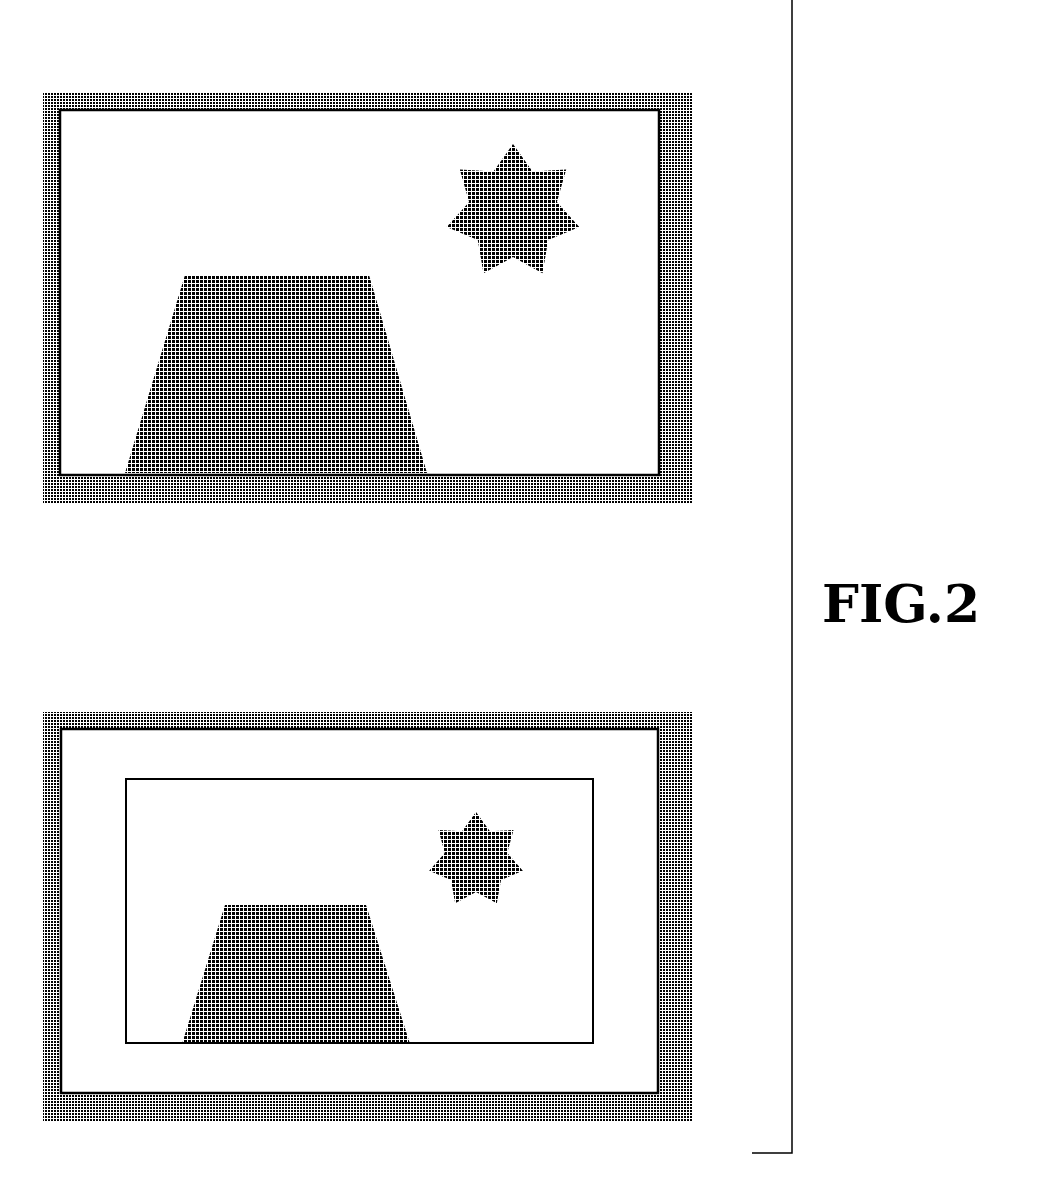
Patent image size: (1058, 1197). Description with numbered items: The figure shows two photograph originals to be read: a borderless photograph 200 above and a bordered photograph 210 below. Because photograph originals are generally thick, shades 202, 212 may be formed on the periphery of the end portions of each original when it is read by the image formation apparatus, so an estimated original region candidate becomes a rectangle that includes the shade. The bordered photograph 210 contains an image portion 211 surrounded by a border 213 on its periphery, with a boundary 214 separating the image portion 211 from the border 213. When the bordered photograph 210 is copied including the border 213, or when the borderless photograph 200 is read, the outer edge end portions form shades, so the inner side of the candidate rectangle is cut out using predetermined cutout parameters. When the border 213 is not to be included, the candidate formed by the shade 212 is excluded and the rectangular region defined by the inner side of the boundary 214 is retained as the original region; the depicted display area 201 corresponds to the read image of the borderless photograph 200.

The borderless photograph 200 is at (410, 282).
The display area 201 is at (500, 445).
The shade 202 is at (683, 205).
The bordered photograph 210 is at (410, 894).
The image portion 211 is at (419, 911).
The shade 212 is at (683, 870).
The border 213 is at (625, 982).
The boundary 214 is at (494, 779).